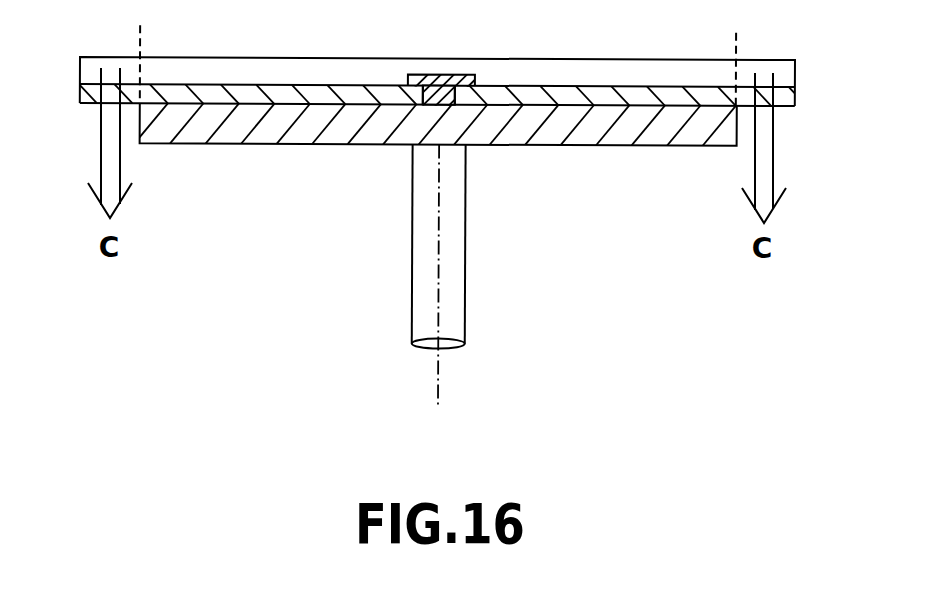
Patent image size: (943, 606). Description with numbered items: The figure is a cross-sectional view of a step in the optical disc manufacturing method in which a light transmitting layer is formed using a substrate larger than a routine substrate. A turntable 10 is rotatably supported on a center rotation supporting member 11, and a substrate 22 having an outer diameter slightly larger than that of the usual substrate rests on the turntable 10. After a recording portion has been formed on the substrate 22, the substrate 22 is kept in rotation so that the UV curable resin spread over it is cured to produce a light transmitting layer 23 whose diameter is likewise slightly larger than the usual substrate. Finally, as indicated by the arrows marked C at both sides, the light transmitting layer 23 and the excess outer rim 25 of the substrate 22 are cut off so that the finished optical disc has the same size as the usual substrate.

The turntable 10 is at (663, 128).
The center rotation supporting member 11 is at (453, 252).
The substrate 22 is at (787, 98).
The light transmitting layer 23 is at (785, 73).
The excess outer rim 25 is at (140, 25).